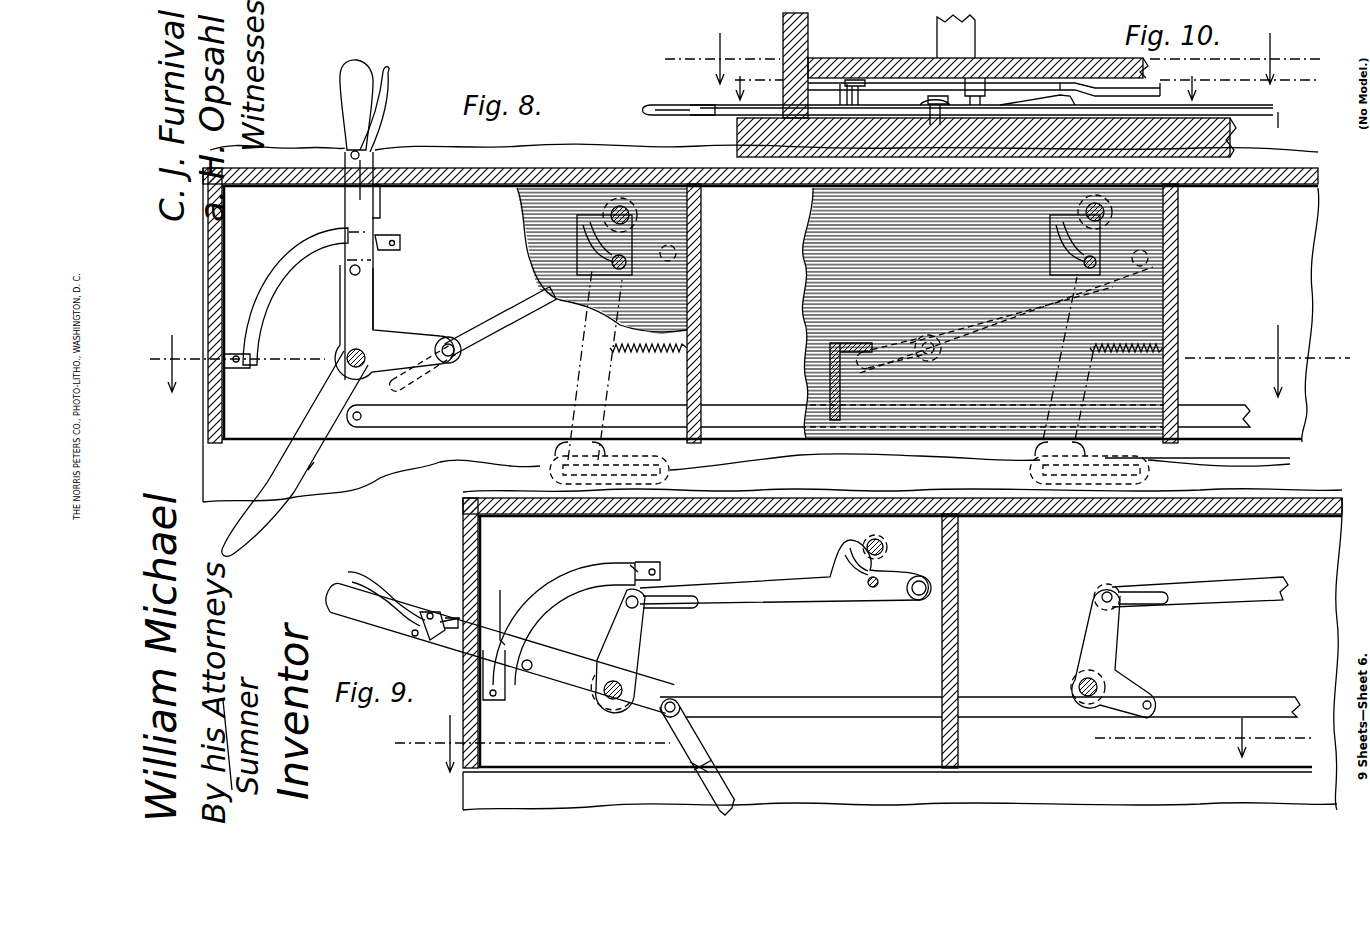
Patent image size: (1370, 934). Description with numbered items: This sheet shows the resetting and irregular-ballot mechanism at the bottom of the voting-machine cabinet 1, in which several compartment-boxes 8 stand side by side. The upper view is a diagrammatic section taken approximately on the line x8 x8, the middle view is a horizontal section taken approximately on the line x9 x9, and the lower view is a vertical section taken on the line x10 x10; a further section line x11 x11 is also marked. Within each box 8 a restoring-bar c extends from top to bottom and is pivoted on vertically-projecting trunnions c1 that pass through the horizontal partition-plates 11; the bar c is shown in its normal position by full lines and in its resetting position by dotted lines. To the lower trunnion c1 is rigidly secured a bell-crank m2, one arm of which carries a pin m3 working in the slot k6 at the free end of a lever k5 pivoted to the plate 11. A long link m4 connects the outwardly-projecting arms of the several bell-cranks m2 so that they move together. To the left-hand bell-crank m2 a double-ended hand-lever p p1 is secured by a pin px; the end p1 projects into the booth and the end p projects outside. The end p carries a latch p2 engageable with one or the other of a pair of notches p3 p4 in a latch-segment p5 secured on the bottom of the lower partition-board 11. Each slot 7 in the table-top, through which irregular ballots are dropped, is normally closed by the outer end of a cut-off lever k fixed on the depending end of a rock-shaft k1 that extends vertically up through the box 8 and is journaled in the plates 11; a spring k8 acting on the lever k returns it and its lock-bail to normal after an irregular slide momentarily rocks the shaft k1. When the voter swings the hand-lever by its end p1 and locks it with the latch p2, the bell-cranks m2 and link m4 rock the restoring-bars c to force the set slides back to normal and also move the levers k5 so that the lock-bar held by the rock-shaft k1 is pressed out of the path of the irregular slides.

In FIG. 8, the cabinet or case 1 is at (207, 393).
In FIG. 10, the cabinet or case 1 is at (785, 45).
In FIG. 9, the cabinet or case 1 is at (462, 513).
In FIG. 8, the slots 7 is at (672, 470).
In FIG. 8, the compartment-box 8 is at (491, 185).
In FIG. 10, the compartment-box 8 is at (810, 38).
In FIG. 9, the compartment-box 8 is at (788, 515).
In FIG. 10, the partition-plates 11 is at (1040, 60).
In FIG. 8, the hand-lever end p is at (345, 208).
In FIG. 10, the hand-lever end p is at (722, 118).
In FIG. 9, the hand-lever end p is at (360, 636).
In FIG. 8, the hand-lever end p1 is at (270, 510).
In FIG. 10, the hand-lever end p1 is at (1050, 106).
In FIG. 9, the hand-lever end p1 is at (728, 802).
In FIG. 8, the latch p2 is at (385, 200).
In FIG. 9, the latch p2 is at (450, 618).
In FIG. 8, the notch p3 is at (385, 235).
In FIG. 9, the notch p3 is at (636, 562).
In FIG. 9, the notch p4 is at (500, 635).
In FIG. 8, the latch-segment p5 is at (270, 272).
In FIG. 9, the latch-segment p5 is at (555, 585).
In FIG. 8, the pin px is at (362, 270).
In FIG. 10, the pin px is at (850, 106).
In FIG. 9, the pin px is at (528, 672).
In FIG. 8, the restoring-bar c is at (862, 235).
In FIG. 10, the restoring-bar c is at (960, 36).
In FIG. 8, the trunnions c1 is at (348, 362).
In FIG. 10, the trunnions c1 is at (935, 60).
In FIG. 9, the trunnions c1 is at (606, 697).
In FIG. 8, the bell-crank m2 is at (398, 346).
In FIG. 10, the bell-crank m2 is at (885, 88).
In FIG. 9, the bell-crank m2 is at (640, 648).
In FIG. 8, the pin m3 is at (452, 362).
In FIG. 10, the pin m3 is at (995, 88).
In FIG. 9, the pin m3 is at (626, 605).
In FIG. 8, the link m4 is at (500, 416).
In FIG. 10, the link m4 is at (1293, 130).
In FIG. 9, the link m4 is at (820, 707).
In FIG. 8, the cut-off lever k is at (597, 338).
In FIG. 8, the rock-shaft k1 is at (992, 320).
In FIG. 8, the lever k5 is at (512, 322).
In FIG. 10, the lever k5 is at (1115, 84).
In FIG. 9, the lever k5 is at (778, 598).
In FIG. 8, the slot k6 is at (400, 372).
In FIG. 9, the slot k6 is at (678, 598).
In FIG. 8, the spring k8 is at (640, 356).
In FIG. 10, the section line x8 is at (992, 55).
In FIG. 10, the section line x9 is at (1027, 90).
In FIG. 9, the section line x10 is at (855, 743).
In FIG. 8, the section line x11 is at (744, 361).